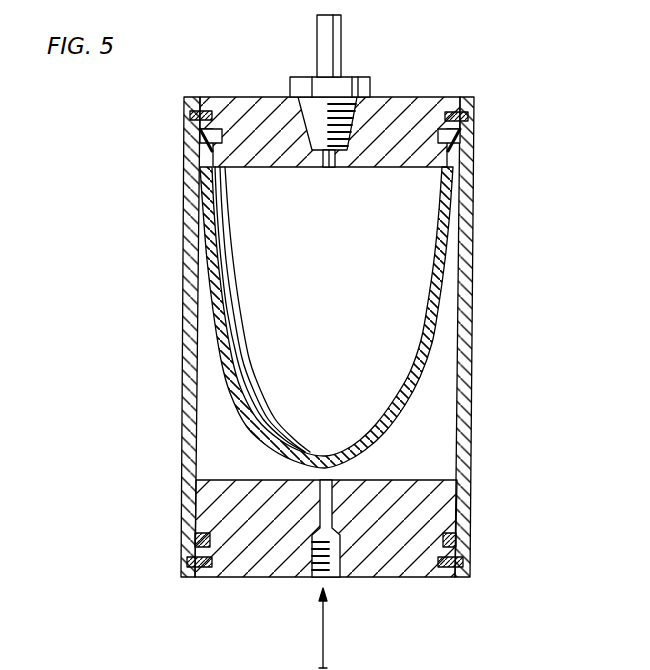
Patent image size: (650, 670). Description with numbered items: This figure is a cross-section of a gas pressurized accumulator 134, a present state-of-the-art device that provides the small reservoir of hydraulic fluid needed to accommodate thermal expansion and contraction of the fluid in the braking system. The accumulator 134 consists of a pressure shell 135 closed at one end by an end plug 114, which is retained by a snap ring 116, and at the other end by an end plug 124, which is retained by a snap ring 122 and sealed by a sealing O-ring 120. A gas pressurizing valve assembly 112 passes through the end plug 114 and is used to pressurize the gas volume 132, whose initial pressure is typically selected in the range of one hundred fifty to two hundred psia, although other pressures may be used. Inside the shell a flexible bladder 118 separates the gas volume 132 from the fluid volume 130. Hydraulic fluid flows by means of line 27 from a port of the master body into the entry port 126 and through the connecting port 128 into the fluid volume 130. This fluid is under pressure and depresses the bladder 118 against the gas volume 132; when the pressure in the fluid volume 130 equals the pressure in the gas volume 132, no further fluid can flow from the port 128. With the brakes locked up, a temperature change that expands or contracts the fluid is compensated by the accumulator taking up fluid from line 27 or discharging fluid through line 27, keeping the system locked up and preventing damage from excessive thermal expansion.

The gas pressurizing valve assembly 112 is at (342, 45).
The end plug 114 is at (403, 97).
The snap ring 116 is at (469, 117).
The flexible bladder 118 is at (460, 177).
The sealing O-ring 120 is at (456, 550).
The snap ring 122 is at (463, 565).
The end plug 124 is at (420, 578).
The entry port 126 is at (318, 575).
The connecting port 128 is at (332, 500).
The fluid volume 130 is at (443, 432).
The gas volume 132 is at (437, 277).
The accumulator 134 is at (184, 412).
The pressure shell 135 is at (472, 358).
The line 27 is at (327, 632).